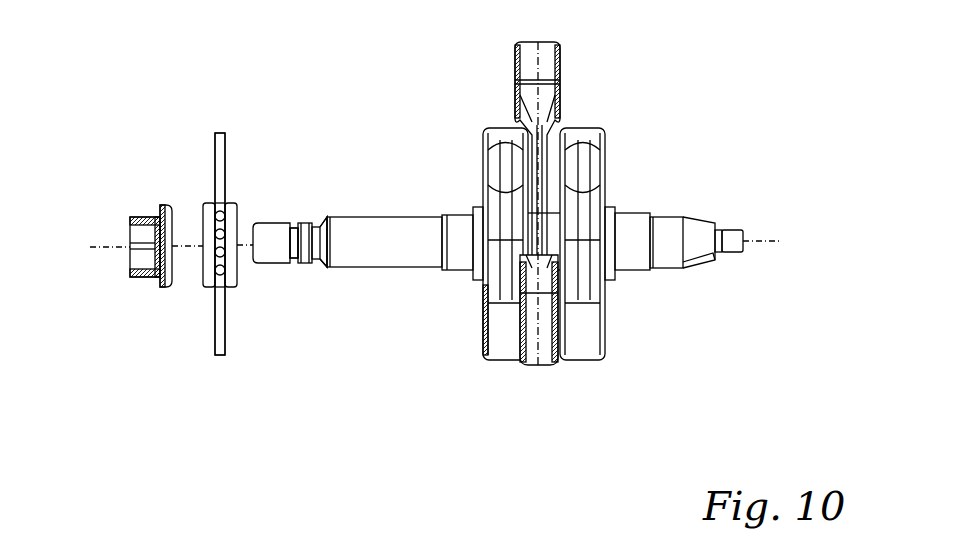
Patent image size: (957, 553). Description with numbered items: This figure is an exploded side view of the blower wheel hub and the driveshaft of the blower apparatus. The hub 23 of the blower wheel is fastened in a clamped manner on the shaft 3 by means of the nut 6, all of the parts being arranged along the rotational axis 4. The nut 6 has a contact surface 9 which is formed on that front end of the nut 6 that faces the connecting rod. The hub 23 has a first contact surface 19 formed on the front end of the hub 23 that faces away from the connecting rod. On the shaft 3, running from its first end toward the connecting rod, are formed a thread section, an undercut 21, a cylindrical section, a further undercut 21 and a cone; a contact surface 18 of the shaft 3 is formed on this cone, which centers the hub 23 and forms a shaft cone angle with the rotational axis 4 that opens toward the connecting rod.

The shaft 3 is at (342, 217).
The rotational axis 4 is at (100, 247).
The nut 6 is at (143, 217).
The contact surface 9 is at (168, 203).
The contact surface 18 is at (323, 267).
The first contact surface 19 is at (200, 287).
The undercut 21 is at (297, 223).
The hub 23 is at (233, 287).